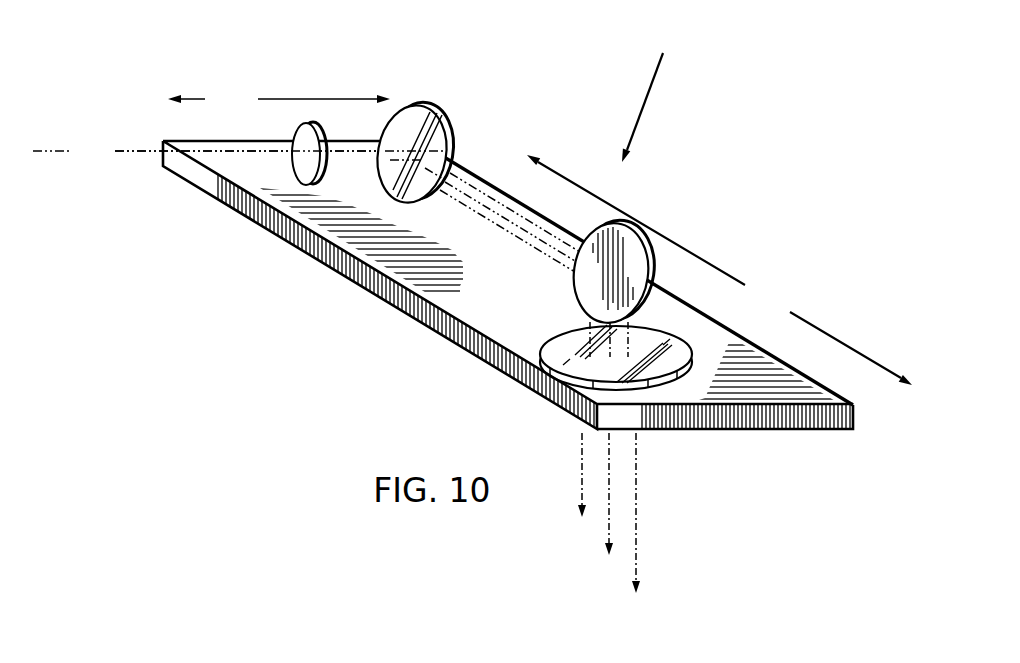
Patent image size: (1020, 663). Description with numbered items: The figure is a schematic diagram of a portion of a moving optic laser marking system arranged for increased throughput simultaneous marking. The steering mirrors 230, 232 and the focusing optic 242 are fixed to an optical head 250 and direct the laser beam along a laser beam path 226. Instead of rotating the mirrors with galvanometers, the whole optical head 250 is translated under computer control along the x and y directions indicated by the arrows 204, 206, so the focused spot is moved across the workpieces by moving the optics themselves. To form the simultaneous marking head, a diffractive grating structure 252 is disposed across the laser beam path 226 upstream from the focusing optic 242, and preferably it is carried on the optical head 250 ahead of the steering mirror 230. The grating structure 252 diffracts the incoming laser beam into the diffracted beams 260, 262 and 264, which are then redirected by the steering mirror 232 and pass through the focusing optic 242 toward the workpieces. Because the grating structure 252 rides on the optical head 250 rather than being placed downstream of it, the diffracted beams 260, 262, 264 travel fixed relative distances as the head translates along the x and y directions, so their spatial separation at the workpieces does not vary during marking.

The arrow 204 is at (279, 100).
The arrow 206 is at (719, 270).
The laser beam path 226 is at (239, 153).
The steering mirror 230 is at (412, 108).
The steering mirror 232 is at (643, 228).
The focusing optic 242 is at (558, 350).
The optical head 250 is at (661, 95).
The diffractive grating structure 252 is at (313, 127).
The diffracted beam 260 is at (578, 475).
The diffracted beam 262 is at (610, 494).
The diffracted beam 264 is at (643, 513).